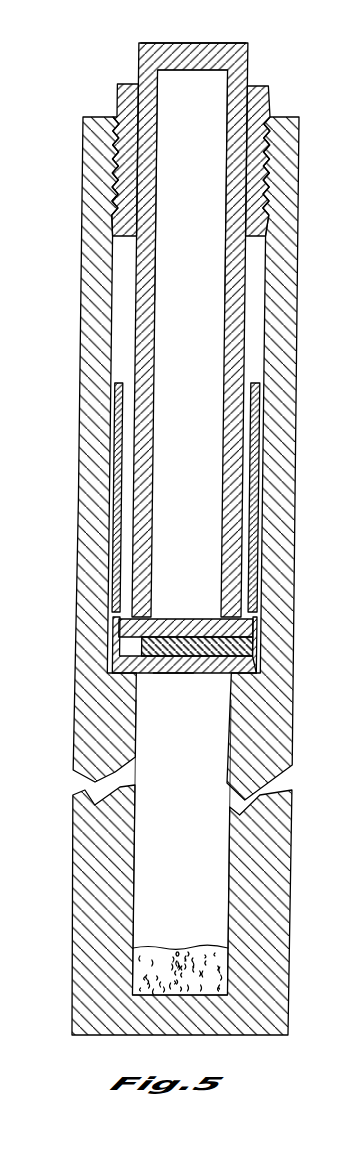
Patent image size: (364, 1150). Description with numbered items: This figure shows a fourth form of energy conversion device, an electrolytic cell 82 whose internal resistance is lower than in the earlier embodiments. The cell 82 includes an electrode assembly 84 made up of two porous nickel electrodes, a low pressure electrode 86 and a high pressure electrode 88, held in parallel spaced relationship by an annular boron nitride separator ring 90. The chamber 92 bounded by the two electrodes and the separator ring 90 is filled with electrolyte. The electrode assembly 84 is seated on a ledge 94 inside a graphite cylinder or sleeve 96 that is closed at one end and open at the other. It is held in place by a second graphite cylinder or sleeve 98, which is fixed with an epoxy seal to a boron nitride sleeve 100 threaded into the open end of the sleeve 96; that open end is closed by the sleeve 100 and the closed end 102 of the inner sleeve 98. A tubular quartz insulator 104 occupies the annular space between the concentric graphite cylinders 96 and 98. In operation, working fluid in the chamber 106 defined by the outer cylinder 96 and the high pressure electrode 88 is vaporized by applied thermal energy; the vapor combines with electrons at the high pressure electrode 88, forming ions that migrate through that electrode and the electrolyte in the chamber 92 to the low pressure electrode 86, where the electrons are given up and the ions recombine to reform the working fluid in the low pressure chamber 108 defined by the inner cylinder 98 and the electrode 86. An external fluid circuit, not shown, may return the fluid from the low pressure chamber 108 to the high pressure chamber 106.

The electrolytic cell 82 is at (74, 286).
The electrode assembly 84 is at (149, 635).
The low pressure electrode 86 is at (129, 628).
The high pressure electrode 88 is at (127, 663).
The separator ring 90 is at (128, 650).
The chamber 92 is at (182, 650).
The ledge 94 is at (242, 670).
The graphite cylinder or sleeve 96 is at (70, 925).
The second graphite cylinder or sleeve 98 is at (128, 56).
The boron nitride sleeve 100 is at (117, 98).
The closed end 102 is at (188, 43).
The tubular quartz insulator 104 is at (121, 437).
The high pressure chamber 106 is at (226, 880).
The low pressure chamber 108 is at (215, 293).